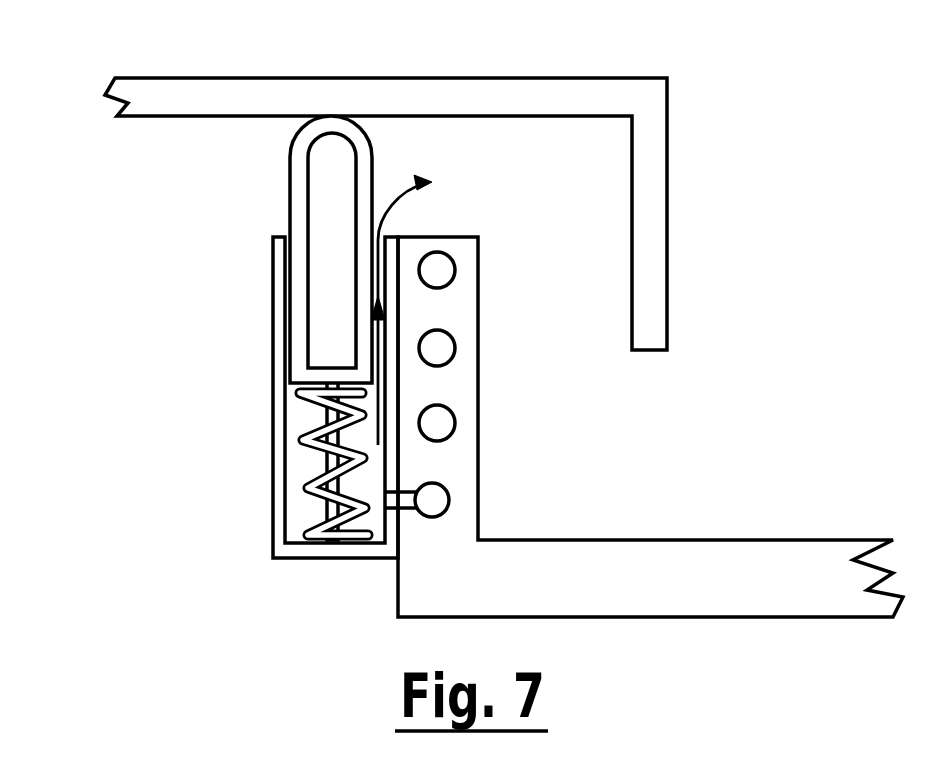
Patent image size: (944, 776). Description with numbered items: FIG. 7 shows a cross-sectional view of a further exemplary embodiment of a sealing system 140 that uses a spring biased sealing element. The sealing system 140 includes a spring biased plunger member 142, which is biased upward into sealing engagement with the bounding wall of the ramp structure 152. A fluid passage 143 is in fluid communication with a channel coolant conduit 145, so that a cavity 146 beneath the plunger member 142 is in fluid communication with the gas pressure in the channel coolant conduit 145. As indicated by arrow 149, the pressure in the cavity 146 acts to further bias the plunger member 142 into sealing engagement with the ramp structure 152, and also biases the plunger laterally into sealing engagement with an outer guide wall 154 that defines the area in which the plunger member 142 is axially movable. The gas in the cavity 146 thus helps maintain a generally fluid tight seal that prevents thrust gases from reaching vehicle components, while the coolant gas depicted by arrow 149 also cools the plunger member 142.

The sealing system 140 is at (202, 571).
The plunger member 142 is at (288, 184).
The fluid passage 143 is at (405, 510).
The channel coolant conduit 145 is at (455, 495).
The cavity 146 is at (320, 457).
The arrow 149 is at (438, 294).
The ramp structure 152 is at (410, 97).
The outer guide wall 154 is at (270, 334).